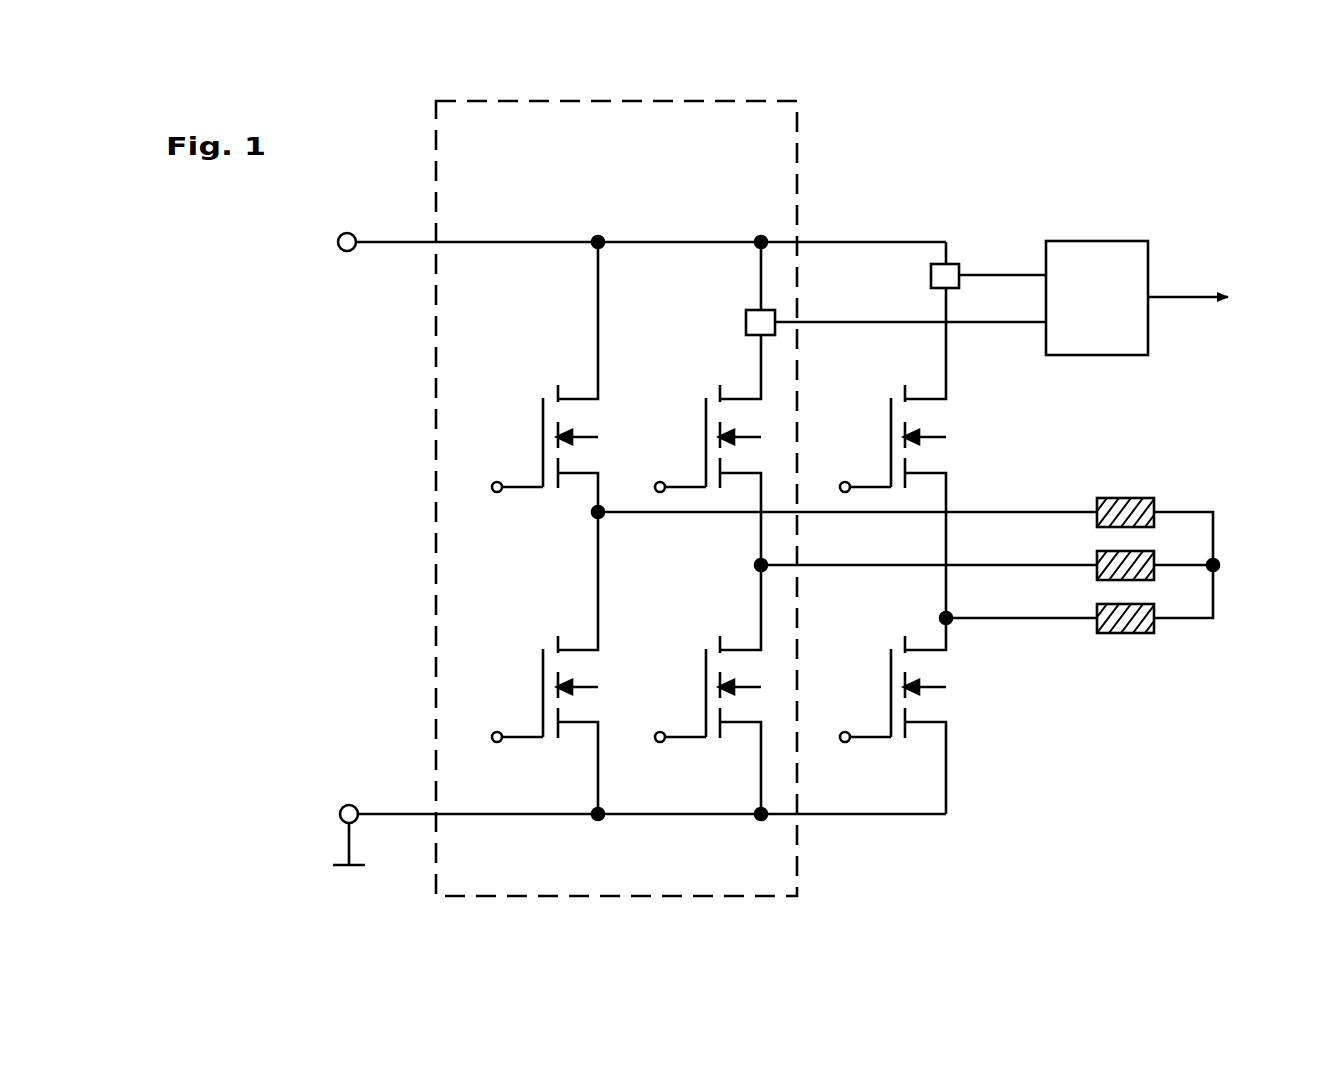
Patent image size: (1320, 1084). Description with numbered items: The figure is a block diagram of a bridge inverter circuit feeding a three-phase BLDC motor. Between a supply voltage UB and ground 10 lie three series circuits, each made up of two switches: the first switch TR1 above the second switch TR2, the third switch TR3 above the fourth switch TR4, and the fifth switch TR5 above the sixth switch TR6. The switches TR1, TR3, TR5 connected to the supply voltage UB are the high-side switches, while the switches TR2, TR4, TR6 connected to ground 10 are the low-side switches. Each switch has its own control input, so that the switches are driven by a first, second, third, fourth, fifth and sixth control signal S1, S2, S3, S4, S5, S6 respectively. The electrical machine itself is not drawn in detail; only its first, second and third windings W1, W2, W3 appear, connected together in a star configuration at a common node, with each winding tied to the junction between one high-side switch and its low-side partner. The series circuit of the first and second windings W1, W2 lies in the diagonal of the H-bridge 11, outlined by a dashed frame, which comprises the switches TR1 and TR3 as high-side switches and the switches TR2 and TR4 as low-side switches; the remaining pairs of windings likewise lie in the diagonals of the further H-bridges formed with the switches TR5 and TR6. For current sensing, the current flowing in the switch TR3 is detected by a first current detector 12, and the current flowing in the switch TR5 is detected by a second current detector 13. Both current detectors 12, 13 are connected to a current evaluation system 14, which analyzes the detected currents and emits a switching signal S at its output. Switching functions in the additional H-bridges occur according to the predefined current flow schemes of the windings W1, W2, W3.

The ground 10 is at (342, 867).
The H-bridge 11 is at (780, 164).
The first current detector 12 is at (748, 322).
The second current detector 13 is at (950, 268).
The current evaluation system 14 is at (1098, 252).
The supply voltage UB is at (338, 242).
The switching signal S is at (1226, 292).
The first switch TR1 is at (540, 386).
The second switch TR2 is at (540, 640).
The third switch TR3 is at (703, 386).
The fourth switch TR4 is at (703, 640).
The fifth switch TR5 is at (888, 386).
The sixth switch TR6 is at (888, 640).
The first control signal S1 is at (516, 487).
The second control signal S2 is at (516, 737).
The third control signal S3 is at (679, 487).
The fourth control signal S4 is at (679, 737).
The fifth control signal S5 is at (864, 487).
The sixth control signal S6 is at (864, 737).
The first winding W1 is at (1100, 502).
The second winding W2 is at (1100, 555).
The third winding W3 is at (1100, 608).